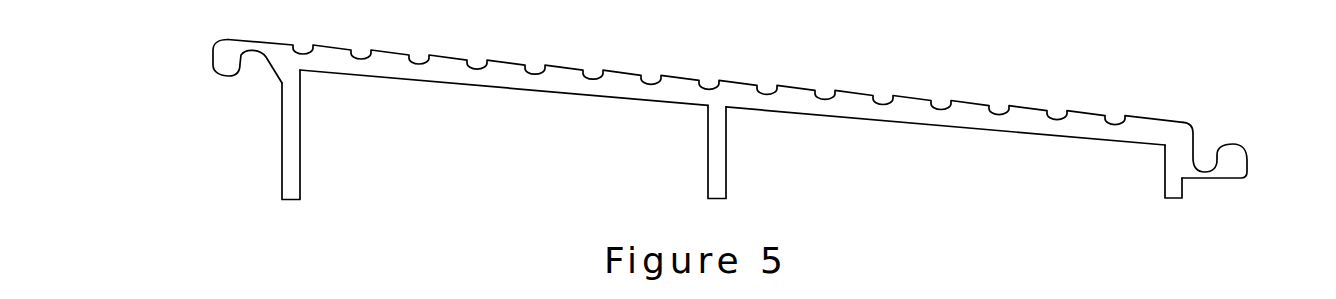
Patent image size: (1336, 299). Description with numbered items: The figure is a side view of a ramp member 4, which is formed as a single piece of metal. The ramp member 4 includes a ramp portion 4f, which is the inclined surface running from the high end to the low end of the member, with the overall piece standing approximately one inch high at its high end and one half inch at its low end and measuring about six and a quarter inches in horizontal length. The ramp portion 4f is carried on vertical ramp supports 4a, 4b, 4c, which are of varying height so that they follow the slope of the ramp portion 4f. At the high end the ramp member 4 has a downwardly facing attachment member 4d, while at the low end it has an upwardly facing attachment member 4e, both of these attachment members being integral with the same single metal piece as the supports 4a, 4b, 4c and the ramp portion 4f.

The ramp member 4 is at (722, 137).
The vertical ramp support 4a is at (300, 178).
The vertical ramp support 4b is at (726, 183).
The vertical ramp support 4c is at (1183, 198).
The downwardly facing attachment member 4d is at (213, 63).
The upwardly facing attachment member 4e is at (1247, 158).
The ramp portion 4f is at (632, 73).